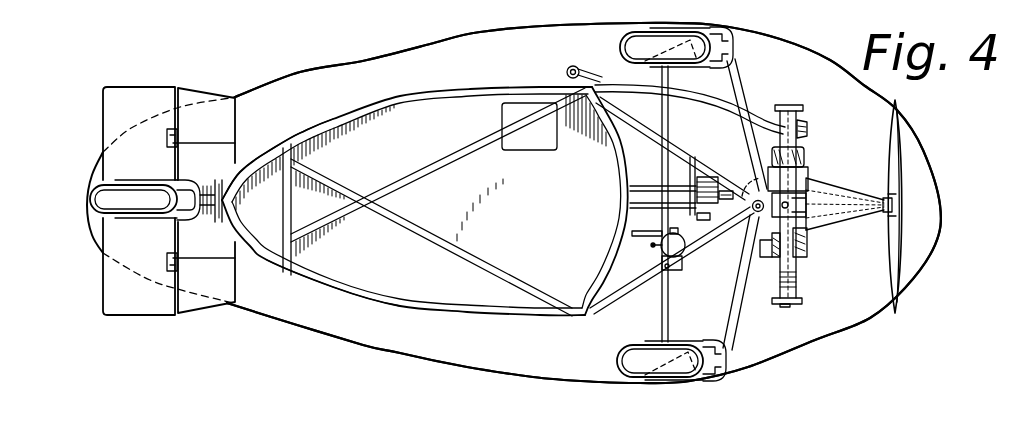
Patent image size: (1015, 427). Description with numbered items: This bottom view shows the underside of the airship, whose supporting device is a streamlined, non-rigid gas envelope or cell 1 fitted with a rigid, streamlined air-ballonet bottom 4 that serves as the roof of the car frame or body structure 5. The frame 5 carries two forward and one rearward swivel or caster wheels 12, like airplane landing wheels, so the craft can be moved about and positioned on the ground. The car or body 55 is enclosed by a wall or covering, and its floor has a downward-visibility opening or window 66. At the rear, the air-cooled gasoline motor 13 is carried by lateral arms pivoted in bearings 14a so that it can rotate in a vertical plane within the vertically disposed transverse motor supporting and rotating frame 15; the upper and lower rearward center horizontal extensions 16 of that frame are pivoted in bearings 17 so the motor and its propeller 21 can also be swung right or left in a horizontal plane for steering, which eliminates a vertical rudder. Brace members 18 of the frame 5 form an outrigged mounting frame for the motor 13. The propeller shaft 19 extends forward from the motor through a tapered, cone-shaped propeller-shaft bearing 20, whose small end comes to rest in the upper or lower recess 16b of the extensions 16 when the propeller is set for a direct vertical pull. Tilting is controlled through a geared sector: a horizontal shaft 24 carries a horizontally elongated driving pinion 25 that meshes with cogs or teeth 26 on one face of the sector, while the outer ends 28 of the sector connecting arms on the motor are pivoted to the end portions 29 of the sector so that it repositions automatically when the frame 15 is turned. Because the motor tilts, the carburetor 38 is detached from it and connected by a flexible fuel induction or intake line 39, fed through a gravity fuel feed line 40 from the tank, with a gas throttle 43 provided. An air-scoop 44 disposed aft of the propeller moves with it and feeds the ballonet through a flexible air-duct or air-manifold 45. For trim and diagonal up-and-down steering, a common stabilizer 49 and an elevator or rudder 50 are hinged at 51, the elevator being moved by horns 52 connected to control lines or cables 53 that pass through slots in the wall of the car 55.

The gas envelope or cell 1 is at (357, 64).
The air-ballonet bottom 4 is at (418, 352).
The car frame or body structure 5 is at (472, 311).
The swivel or caster wheels 12 is at (92, 200).
The non-electric motor 13 is at (803, 153).
The bearings 14a is at (788, 105).
The motor supporting and rotating frame 15 is at (787, 273).
The center horizontal extensions 16 is at (775, 187).
The recess 16b is at (807, 233).
The bearings 17 is at (752, 222).
The brace members 18 is at (670, 108).
The propeller shaft 19 is at (900, 199).
The propeller-shaft bearing 20 is at (878, 215).
The propeller 21 is at (901, 157).
The horizontal shaft 24 is at (647, 185).
The spur gear or driving pinion 25 is at (710, 177).
The cogs or teeth 26 is at (731, 191).
The outer ends 28 is at (823, 217).
The end portions 29 is at (808, 195).
The carburetor 38 is at (673, 257).
The fuel induction or intake line 39 is at (716, 248).
The gravity fuel feed line 40 is at (653, 247).
The gas throttle 43 is at (640, 231).
The air-scoop 44 is at (807, 126).
The flexible air-duct or air-manifold 45 is at (588, 69).
The common stabilizer 49 is at (198, 97).
The elevator or rudder 50 is at (133, 97).
The hinge 51 is at (170, 273).
The horns 52 is at (167, 144).
The control lines or cables 53 is at (250, 152).
The car or body 55 is at (390, 276).
The downward-visibility opening or window 66 is at (529, 126).